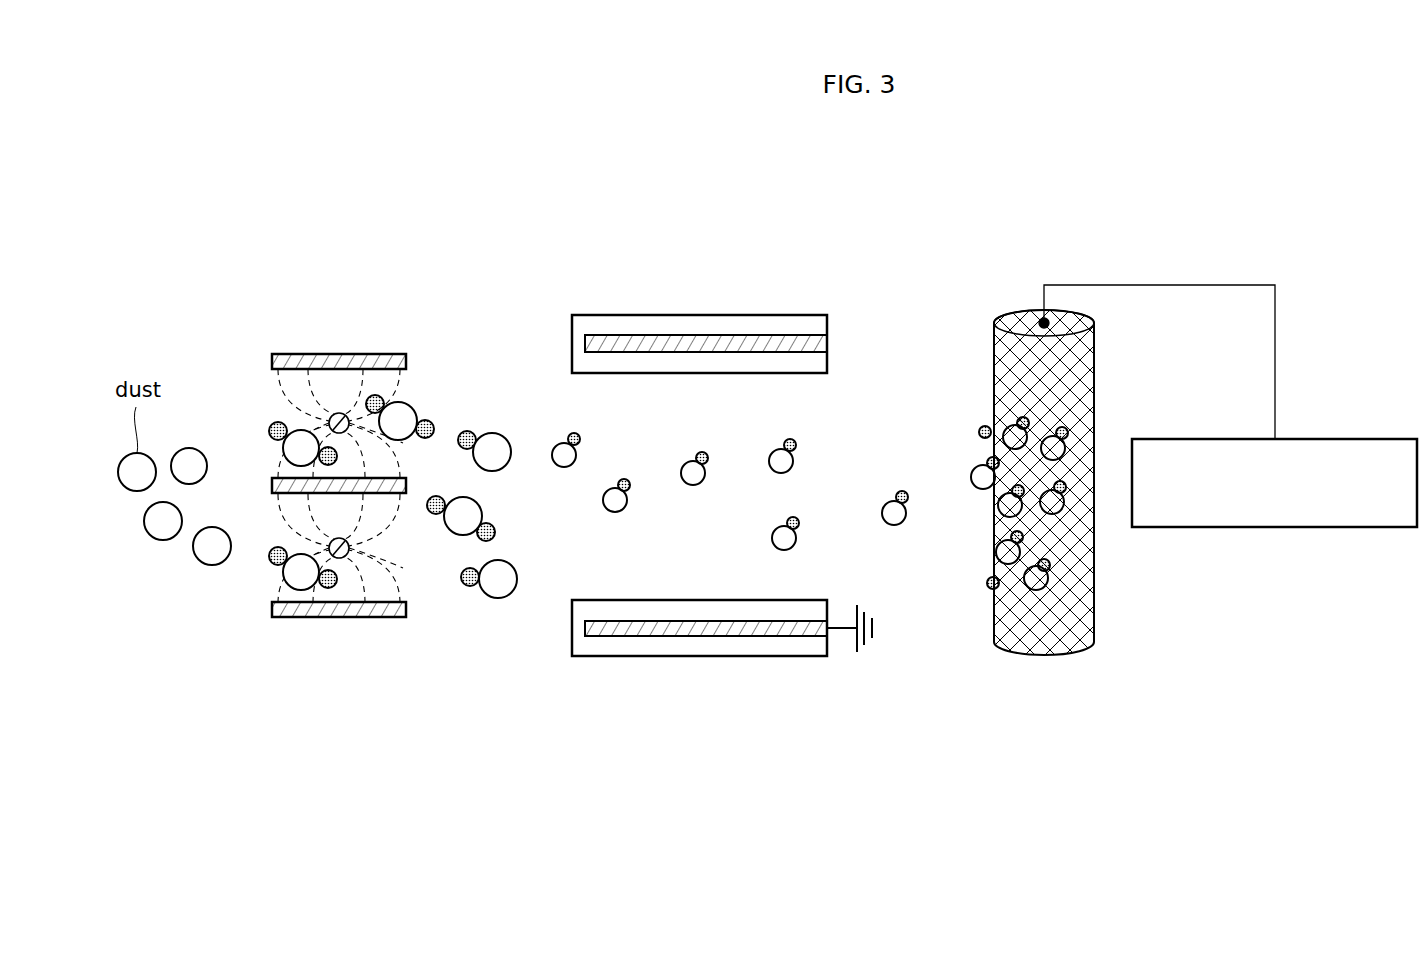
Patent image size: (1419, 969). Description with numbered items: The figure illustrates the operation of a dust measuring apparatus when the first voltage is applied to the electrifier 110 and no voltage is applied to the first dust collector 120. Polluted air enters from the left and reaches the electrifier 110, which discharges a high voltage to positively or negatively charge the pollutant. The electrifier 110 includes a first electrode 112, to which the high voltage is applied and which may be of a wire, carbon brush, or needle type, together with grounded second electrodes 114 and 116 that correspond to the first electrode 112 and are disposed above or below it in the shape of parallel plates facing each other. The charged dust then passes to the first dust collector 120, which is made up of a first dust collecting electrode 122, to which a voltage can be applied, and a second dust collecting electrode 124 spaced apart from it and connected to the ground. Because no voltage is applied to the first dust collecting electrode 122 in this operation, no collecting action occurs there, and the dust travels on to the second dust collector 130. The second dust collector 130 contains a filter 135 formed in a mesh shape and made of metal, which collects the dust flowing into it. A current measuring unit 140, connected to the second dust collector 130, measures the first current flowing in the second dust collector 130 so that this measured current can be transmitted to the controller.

The electrifier 110 is at (334, 248).
The first electrode 112 is at (330, 418).
The second electrode 114 is at (365, 354).
The second electrode 116 is at (287, 486).
The first dust collector 120 is at (706, 248).
The first dust collecting electrode 122 is at (599, 315).
The second dust collecting electrode 124 is at (599, 657).
The second dust collector 130 is at (1040, 260).
The filter 135 is at (985, 338).
The current measuring unit 140 is at (1278, 527).